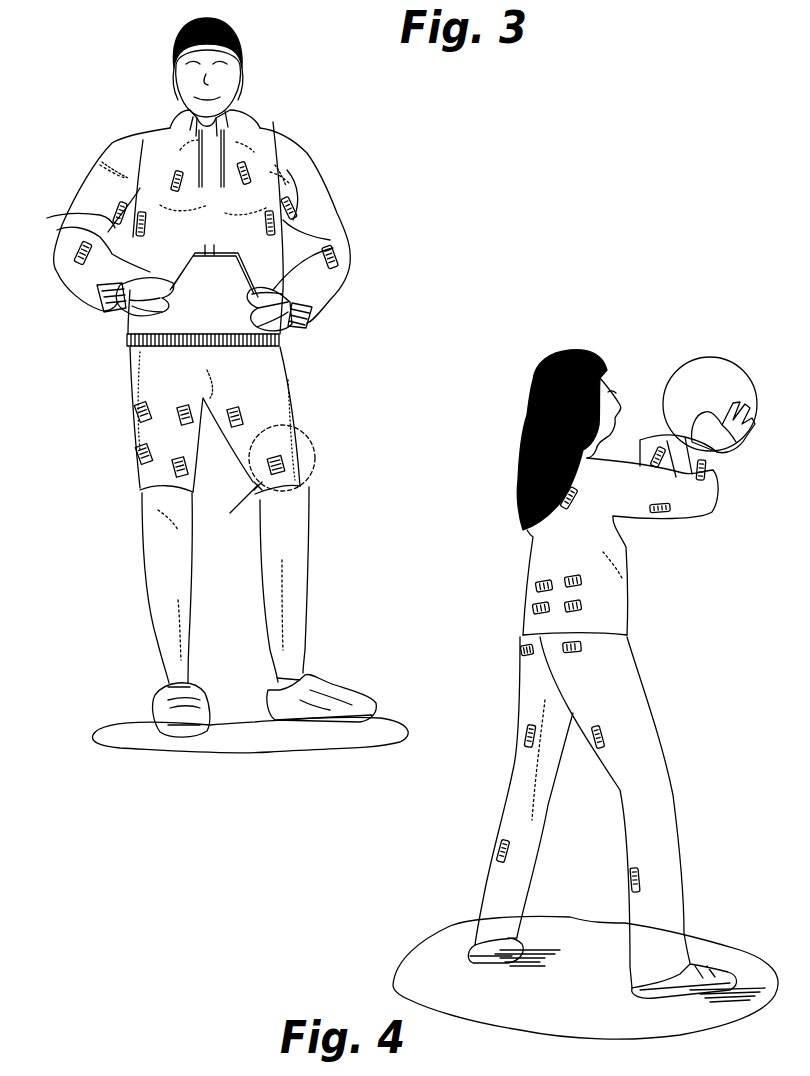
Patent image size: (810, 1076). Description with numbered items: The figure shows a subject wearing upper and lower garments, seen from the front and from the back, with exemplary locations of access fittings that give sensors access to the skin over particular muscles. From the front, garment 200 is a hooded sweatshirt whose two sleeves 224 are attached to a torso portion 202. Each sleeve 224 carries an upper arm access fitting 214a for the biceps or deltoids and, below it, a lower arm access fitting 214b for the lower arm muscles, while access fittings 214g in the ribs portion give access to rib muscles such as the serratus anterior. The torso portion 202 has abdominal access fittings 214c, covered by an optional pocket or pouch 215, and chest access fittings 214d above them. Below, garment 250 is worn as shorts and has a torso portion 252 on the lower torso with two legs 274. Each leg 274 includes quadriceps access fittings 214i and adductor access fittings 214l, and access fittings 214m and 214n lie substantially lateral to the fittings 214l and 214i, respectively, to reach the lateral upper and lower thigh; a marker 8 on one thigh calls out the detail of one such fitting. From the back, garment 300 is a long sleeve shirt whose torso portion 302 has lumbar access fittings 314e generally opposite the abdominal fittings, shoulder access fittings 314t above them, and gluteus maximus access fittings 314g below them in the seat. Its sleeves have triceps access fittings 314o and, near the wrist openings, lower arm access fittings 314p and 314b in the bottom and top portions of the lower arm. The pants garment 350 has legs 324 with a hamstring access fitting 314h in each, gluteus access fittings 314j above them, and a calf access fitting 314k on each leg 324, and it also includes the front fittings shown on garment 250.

In FIG. 3, the garment 200 is at (75, 100).
In FIG. 3, the torso portion 202 is at (268, 140).
In FIG. 3, the upper arm access fitting 214a is at (103, 165).
In FIG. 3, the lower arm access fitting 214b is at (68, 272).
In FIG. 3, the abdominal access fittings 214c is at (214, 257).
In FIG. 3, the chest access fittings 214d is at (176, 180).
In FIG. 3, the rib access fittings 214g is at (100, 215).
In FIG. 3, the quadriceps access fittings 214i is at (172, 478).
In FIG. 3, the adductor access fittings 214l is at (180, 406).
In FIG. 3, the lateral upper thigh access fitting 214m is at (137, 408).
In FIG. 3, the lateral lower thigh access fitting 214n is at (138, 453).
In FIG. 3, the sleeves 224 is at (73, 205).
In FIG. 3, the garment 250 is at (112, 443).
In FIG. 3, the torso portion 252 is at (130, 370).
In FIG. 3, the pocket 215 is at (273, 365).
In FIG. 3, the legs 274 is at (170, 470).
In FIG. 3, the section line indicator 8 is at (232, 512).
In FIG. 4, the garment 300 is at (464, 562).
In FIG. 4, the torso portion 302 is at (530, 540).
In FIG. 4, the lower arm access fitting 314b is at (710, 470).
In FIG. 4, the lumbar access fittings 314e is at (538, 585).
In FIG. 4, the gluteus maximus access fittings 314g is at (537, 607).
In FIG. 4, the hamstring access fitting 314h is at (525, 735).
In FIG. 4, the gluteus access fittings 314j is at (520, 650).
In FIG. 4, the calf access fitting 314k is at (498, 853).
In FIG. 4, the triceps access fittings 314o is at (660, 512).
In FIG. 4, the lower arm access fitting 314p is at (640, 440).
In FIG. 4, the shoulder access fittings 314t is at (573, 493).
In FIG. 4, the legs 324 is at (495, 817).
In FIG. 4, the pants garment 350 is at (664, 715).